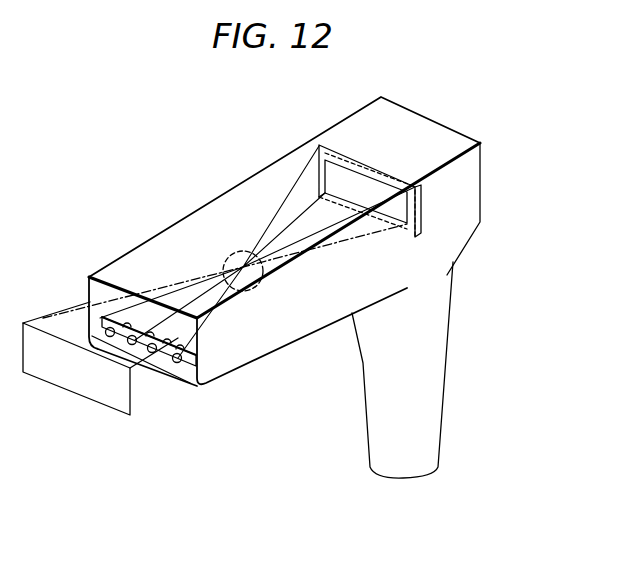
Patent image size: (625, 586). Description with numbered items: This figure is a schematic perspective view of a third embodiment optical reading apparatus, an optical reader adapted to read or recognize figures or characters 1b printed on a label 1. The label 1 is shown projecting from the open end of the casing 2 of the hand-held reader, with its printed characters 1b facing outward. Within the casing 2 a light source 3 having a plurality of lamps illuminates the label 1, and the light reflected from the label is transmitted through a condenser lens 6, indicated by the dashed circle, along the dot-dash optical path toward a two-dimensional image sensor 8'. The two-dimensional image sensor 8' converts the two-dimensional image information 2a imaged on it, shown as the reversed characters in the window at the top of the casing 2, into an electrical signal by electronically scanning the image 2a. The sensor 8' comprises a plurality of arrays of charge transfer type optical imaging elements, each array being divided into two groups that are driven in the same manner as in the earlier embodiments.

The label 1 is at (121, 408).
The figures or characters 1b is at (78, 386).
The casing 2 is at (249, 176).
The two-dimensional image information 2a is at (345, 170).
The light source 3 is at (176, 363).
The condenser lens 6 is at (232, 252).
The two-dimensional image sensor 8' is at (466, 208).